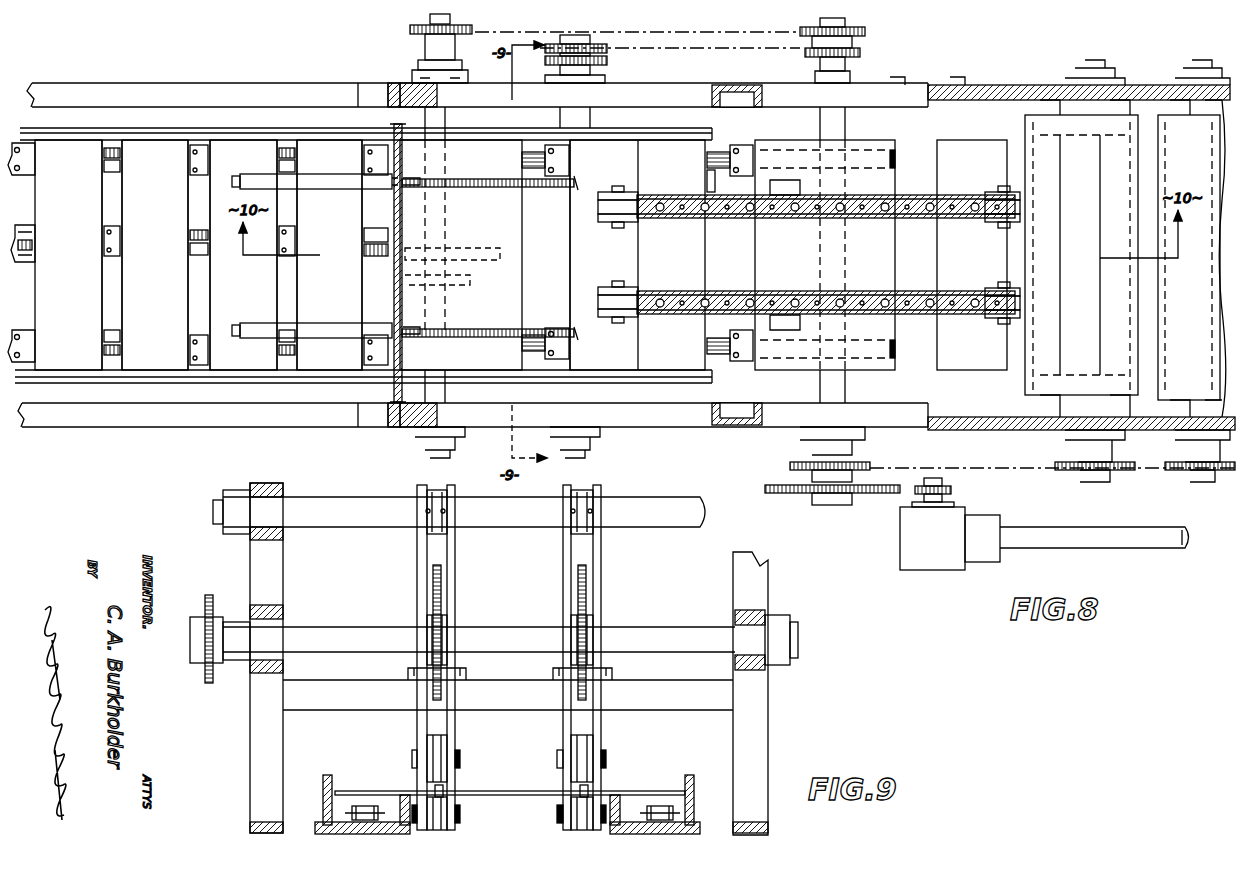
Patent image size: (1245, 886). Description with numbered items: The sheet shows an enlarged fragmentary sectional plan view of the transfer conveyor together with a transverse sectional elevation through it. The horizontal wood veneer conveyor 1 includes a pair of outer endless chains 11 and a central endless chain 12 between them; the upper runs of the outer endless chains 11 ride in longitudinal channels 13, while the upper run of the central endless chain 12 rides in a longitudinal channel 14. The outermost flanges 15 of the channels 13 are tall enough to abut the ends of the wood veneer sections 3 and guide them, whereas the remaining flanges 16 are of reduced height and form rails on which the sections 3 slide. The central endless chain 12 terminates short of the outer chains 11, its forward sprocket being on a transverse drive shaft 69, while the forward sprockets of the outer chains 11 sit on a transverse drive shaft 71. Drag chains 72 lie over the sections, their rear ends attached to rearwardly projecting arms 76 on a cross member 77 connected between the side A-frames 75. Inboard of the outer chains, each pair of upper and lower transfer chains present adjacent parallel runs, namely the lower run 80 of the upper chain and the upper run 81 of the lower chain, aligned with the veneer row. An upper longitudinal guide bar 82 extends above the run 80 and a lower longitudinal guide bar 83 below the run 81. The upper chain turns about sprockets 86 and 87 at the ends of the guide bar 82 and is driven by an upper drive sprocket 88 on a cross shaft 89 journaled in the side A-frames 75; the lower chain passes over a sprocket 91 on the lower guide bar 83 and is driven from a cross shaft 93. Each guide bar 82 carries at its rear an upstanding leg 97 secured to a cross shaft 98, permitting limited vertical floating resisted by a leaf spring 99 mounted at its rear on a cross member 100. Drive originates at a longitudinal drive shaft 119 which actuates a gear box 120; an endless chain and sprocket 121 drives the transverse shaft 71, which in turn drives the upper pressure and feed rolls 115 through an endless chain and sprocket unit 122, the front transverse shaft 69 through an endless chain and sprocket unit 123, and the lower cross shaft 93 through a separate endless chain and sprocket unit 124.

In FIG. 8, the wood veneer conveyor 1 is at (178, 390).
In FIG. 8, the wood veneer sections 3 is at (512, 252).
In FIG. 9, the wood veneer sections 3 is at (493, 790).
In FIG. 8, the outer endless chains 11 is at (708, 160).
In FIG. 9, the outer endless chains 11 is at (366, 804).
In FIG. 8, the central endless chain 12 is at (372, 258).
In FIG. 8, the longitudinal channels 13 is at (108, 176).
In FIG. 9, the longitudinal channels 13 is at (340, 816).
In FIG. 8, the longitudinal channel 14 is at (366, 240).
In FIG. 8, the outermost flanges 15 is at (604, 137).
In FIG. 9, the outermost flanges 15 is at (323, 795).
In FIG. 8, the remaining flanges 16 is at (192, 232).
In FIG. 8, the transverse drive shaft 69 is at (430, 50).
In FIG. 8, the transverse drive shaft 71 is at (830, 68).
In FIG. 8, the drag chains 72 is at (494, 188).
In FIG. 8, the side A-frames 75 is at (392, 413).
In FIG. 9, the side A-frames 75 is at (250, 698).
In FIG. 8, the rearwardly projecting arms 76 is at (312, 178).
In FIG. 8, the cross member 77 is at (392, 130).
In FIG. 9, the lower run of the upper endless chain 80 is at (446, 785).
In FIG. 9, the upper run of the lower endless chain 81 is at (572, 791).
In FIG. 8, the upper longitudinal guide bar 82 is at (770, 292).
In FIG. 9, the lower longitudinal guide bar 83 is at (458, 820).
In FIG. 8, the sprocket 86 is at (608, 205).
In FIG. 9, the sprocket 86 is at (440, 752).
In FIG. 8, the sprocket 87 is at (1000, 212).
In FIG. 9, the upper drive sprocket 88 is at (440, 572).
In FIG. 9, the cross shaft 89 is at (680, 636).
In FIG. 9, the sprocket 91 is at (440, 812).
In FIG. 8, the cross shaft 93 is at (580, 442).
In FIG. 9, the upstanding leg 97 is at (456, 604).
In FIG. 9, the cross shaft 98 is at (342, 518).
In FIG. 9, the leaf spring 99 is at (426, 675).
In FIG. 9, the cross member 100 is at (316, 695).
In FIG. 8, the upper pressure and feed rolls 115 is at (1165, 388).
In FIG. 8, the longitudinal drive shaft 119 is at (1083, 541).
In FIG. 8, the gear box 120 is at (933, 558).
In FIG. 8, the endless chain and sprocket 121 is at (908, 490).
In FIG. 8, the endless chain and sprocket unit 122 is at (1015, 472).
In FIG. 8, the endless chain and sprocket unit 123 is at (720, 36).
In FIG. 8, the endless chain and sprocket unit 124 is at (657, 50).